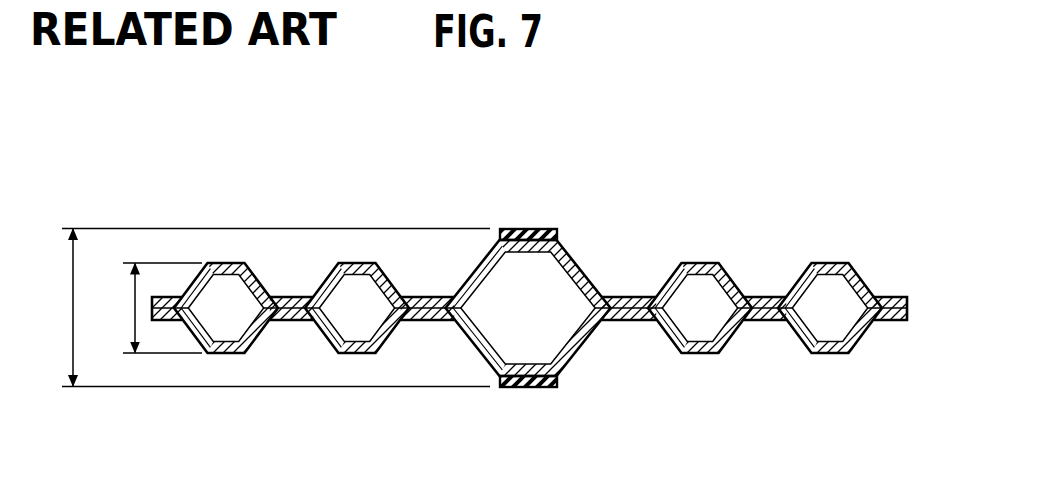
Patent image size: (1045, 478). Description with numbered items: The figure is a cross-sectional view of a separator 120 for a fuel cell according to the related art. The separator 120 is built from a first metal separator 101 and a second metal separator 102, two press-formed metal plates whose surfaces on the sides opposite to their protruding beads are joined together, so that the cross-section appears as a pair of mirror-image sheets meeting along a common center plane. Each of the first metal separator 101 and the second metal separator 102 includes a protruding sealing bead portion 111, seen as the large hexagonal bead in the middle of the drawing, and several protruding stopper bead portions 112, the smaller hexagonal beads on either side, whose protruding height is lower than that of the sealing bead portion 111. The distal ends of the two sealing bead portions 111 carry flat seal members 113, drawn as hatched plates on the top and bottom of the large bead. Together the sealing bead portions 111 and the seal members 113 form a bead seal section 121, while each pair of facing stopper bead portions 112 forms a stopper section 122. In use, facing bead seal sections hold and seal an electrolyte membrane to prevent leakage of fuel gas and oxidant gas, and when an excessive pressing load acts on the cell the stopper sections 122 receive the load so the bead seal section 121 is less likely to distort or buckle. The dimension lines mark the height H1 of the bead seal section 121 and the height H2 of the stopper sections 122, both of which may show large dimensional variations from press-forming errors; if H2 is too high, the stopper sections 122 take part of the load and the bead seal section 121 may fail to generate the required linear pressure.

The separator 120 is at (518, 281).
The bead seal section 121 is at (521, 221).
The stopper section 122 is at (227, 259).
The sealing bead portion 111 is at (578, 252).
The stopper bead portion 112 is at (266, 280).
The seal member 113 is at (538, 232).
The first metal separator 101 is at (170, 341).
The second metal separator 102 is at (176, 279).
The height of the bead seal section H1 is at (263, 308).
The height of the stopper sections H2 is at (148, 308).